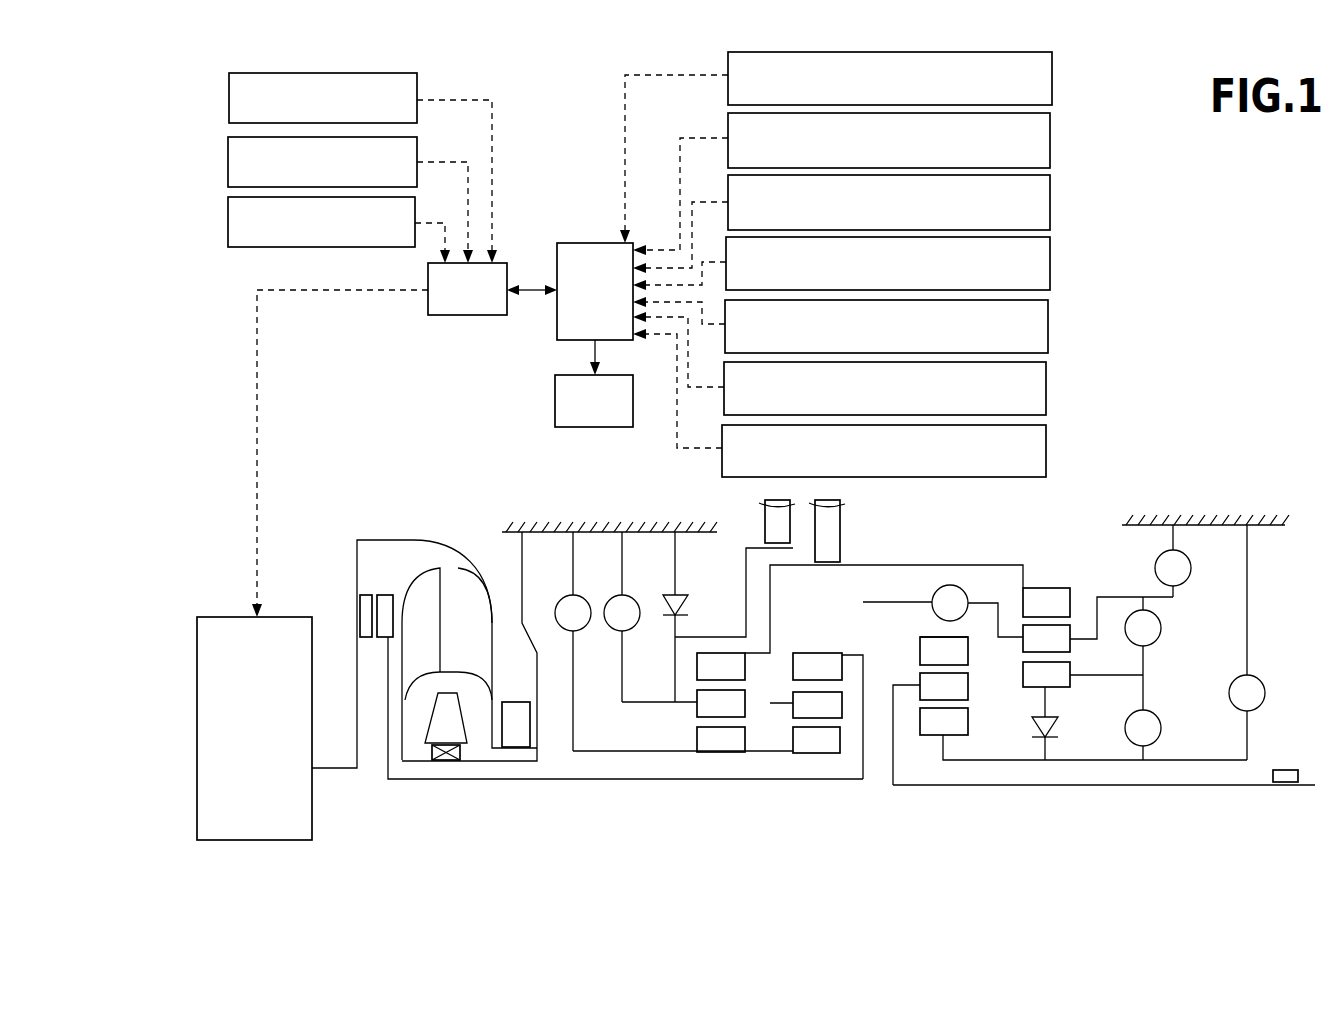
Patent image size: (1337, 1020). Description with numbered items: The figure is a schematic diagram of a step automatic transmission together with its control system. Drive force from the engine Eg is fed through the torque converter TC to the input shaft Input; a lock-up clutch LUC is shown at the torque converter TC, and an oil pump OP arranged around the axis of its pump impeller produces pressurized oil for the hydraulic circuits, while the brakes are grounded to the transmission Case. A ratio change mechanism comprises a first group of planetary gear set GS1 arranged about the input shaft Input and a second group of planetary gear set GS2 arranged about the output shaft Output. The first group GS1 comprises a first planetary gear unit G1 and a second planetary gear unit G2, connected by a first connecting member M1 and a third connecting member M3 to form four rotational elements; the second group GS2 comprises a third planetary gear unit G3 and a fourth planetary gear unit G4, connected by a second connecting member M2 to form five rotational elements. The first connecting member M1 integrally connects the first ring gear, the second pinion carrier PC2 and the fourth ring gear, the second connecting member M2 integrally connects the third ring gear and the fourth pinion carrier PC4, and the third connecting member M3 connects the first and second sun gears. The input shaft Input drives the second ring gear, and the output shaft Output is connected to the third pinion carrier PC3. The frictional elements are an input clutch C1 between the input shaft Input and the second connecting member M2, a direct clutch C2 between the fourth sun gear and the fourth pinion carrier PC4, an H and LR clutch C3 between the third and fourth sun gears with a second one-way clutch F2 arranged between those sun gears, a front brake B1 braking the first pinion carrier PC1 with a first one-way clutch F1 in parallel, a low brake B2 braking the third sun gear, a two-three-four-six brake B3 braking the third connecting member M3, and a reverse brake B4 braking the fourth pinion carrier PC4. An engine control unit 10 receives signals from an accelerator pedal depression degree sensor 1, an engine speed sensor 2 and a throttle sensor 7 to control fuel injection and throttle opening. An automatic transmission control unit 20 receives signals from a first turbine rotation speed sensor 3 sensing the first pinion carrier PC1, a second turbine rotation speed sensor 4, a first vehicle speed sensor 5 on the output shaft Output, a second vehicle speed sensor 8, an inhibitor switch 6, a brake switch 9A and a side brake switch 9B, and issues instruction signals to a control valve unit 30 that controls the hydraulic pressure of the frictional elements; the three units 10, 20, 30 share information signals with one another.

The throttle sensor 7 is at (229, 97).
The accelerator pedal depression degree sensor 1 is at (228, 162).
The engine speed sensor 2 is at (228, 224).
The engine control unit 10 is at (465, 316).
The automatic transmission control unit 20 is at (589, 243).
The control valve unit 30 is at (555, 400).
The side brake switch 9B is at (1052, 80).
The brake switch 9A is at (1050, 140).
The inhibitor switch 6 is at (1050, 202).
The first turbine rotation speed sensor 3 is at (1050, 272).
The second turbine rotation speed sensor 4 is at (1048, 333).
The first vehicle speed sensor 5 is at (1046, 397).
The second vehicle speed sensor 8 is at (1046, 458).
The engine Eg is at (296, 616).
The torque converter TC is at (441, 522).
The lock-up clutch LUC is at (370, 582).
The oil pump OP is at (514, 700).
The transmission case Case is at (596, 530).
The input shaft Input is at (548, 782).
The output shaft Output is at (1175, 788).
The front brake B1 is at (650, 617).
The low brake B2 is at (1247, 642).
The 2346 brake B3 is at (674, 641).
The reverse brake B4 is at (1173, 561).
The input clutch C1 is at (971, 611).
The direct clutch C2 is at (1115, 653).
The H & LR clutch C3 is at (1143, 735).
The first one-way clutch F1 is at (698, 588).
The second one-way clutch F2 is at (1068, 710).
The first planetary gear unit G1 is at (748, 800).
The second planetary gear unit G2 is at (845, 800).
The third planetary gear unit G3 is at (970, 800).
The fourth planetary gear unit G4 is at (1072, 800).
The first group of planetary gear set GS1 is at (845, 840).
The second group of planetary gear set GS2 is at (1072, 840).
The first connecting member M1 is at (949, 565).
The second connecting member M2 is at (990, 640).
The third connecting member M3 is at (755, 754).
The first pinion carrier PC1 is at (690, 703).
The second pinion carrier PC2 is at (784, 702).
The third pinion carrier PC3 is at (907, 685).
The fourth pinion carrier PC4 is at (1085, 638).